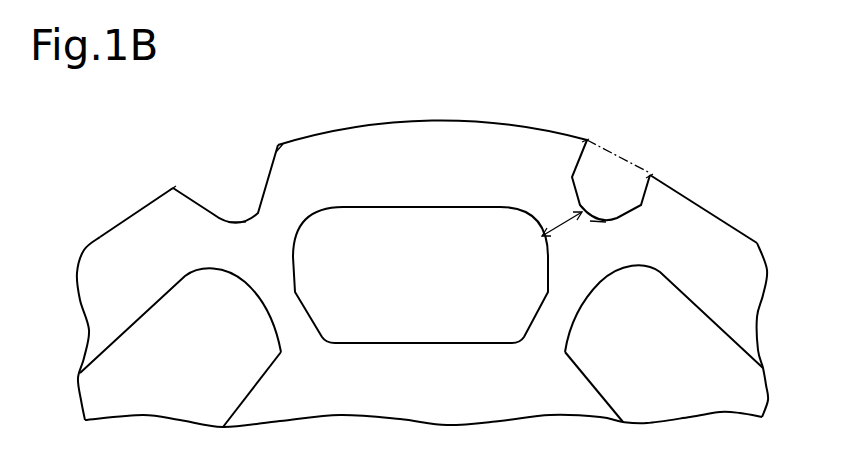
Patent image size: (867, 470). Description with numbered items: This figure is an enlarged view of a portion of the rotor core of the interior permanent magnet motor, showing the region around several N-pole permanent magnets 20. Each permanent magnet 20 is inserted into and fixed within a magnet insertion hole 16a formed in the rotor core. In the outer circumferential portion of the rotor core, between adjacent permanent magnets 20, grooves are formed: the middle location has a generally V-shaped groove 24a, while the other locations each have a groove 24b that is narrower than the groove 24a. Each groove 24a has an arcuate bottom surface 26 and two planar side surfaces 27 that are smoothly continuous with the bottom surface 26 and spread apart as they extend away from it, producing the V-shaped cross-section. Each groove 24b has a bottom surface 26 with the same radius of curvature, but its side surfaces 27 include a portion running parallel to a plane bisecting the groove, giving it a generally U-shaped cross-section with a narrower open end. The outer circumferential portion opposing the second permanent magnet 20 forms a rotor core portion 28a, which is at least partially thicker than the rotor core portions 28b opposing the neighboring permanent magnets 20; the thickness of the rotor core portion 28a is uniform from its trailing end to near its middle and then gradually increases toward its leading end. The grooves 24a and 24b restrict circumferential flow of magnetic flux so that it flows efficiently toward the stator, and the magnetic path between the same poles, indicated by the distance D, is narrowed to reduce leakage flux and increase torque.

The magnet insertion hole 16a is at (270, 372).
The permanent magnet 20 is at (251, 388).
The groove 24a is at (223, 187).
The groove 24b is at (601, 180).
The bottom surface 26 is at (255, 213).
The side surface 27 is at (192, 199).
The rotor core portion 28a is at (387, 142).
The rotor core portion 28b is at (100, 235).
The distance D is at (560, 216).